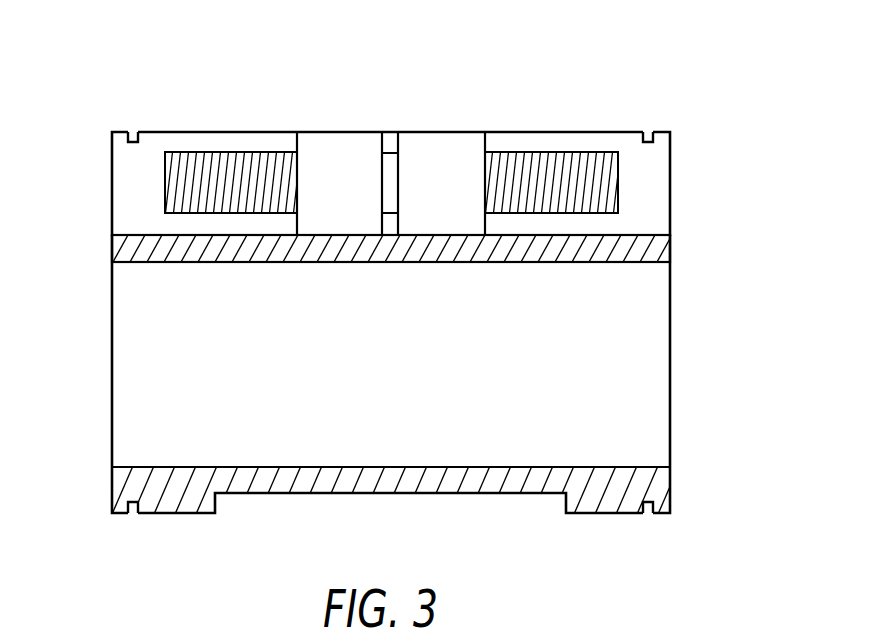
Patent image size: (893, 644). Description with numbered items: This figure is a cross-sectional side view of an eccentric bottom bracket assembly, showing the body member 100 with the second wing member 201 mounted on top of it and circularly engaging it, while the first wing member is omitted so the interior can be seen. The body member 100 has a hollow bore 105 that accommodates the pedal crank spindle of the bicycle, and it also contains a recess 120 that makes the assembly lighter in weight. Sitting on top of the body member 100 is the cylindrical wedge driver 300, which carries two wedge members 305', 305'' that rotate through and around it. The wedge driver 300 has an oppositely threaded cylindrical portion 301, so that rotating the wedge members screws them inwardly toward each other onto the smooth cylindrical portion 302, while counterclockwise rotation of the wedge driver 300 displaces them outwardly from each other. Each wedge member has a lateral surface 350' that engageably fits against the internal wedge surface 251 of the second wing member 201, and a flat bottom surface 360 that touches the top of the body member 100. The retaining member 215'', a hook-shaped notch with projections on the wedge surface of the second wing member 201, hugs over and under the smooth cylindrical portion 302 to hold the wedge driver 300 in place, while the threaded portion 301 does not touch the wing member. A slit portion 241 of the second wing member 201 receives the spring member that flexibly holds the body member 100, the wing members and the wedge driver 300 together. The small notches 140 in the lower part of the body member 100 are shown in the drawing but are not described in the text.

The body member 100 is at (671, 348).
The hollow bore 105 is at (485, 395).
The recess 120 is at (362, 498).
The bottom notch 140 is at (132, 505).
The second wing member 201 is at (672, 195).
The slit portion of the second wing member 241 is at (134, 130).
The internal wedge surface of the second wing member 251 is at (643, 172).
The wedge driver 300 is at (165, 195).
The threaded cylindrical portion 301 is at (193, 178).
The smooth cylindrical portion of the wedge driver 302 is at (390, 182).
The retaining member 215'' is at (237, 197).
The wedge member 305' is at (327, 141).
The wedge member 305'' is at (454, 144).
The lateral surface 350' is at (391, 124).
The flat bottom surface of the wedge member 360 is at (333, 237).